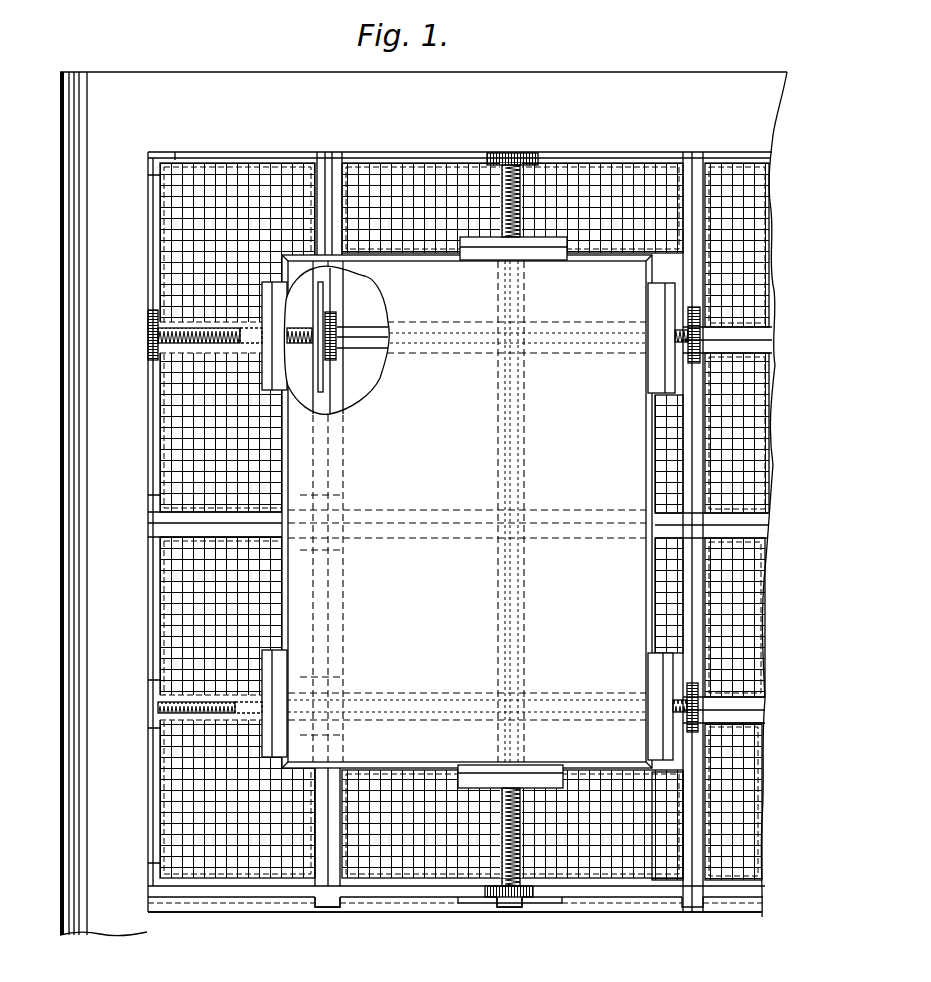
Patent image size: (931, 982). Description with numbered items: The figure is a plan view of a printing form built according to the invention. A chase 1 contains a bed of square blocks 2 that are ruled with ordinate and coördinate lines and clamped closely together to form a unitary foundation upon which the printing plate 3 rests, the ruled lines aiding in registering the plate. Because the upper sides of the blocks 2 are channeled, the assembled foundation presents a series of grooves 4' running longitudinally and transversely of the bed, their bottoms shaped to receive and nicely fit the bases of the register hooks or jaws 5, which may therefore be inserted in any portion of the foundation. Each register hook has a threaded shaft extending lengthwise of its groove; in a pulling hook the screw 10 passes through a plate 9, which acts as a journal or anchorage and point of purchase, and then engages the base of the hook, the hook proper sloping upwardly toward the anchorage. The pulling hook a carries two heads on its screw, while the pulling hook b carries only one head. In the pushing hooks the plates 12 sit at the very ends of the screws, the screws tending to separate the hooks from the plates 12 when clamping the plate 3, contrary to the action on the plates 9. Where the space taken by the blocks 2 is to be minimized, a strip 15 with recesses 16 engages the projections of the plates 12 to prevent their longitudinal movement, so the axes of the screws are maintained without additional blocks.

The chase 1 is at (423, 504).
The square blocks 2 is at (249, 185).
The plate 3 is at (467, 511).
The grooves 4' is at (404, 479).
The hooks or jaws 5 is at (277, 355).
The plates 9 is at (323, 300).
The screw 10 is at (200, 325).
The plates 12 is at (705, 297).
The strip 15 is at (445, 903).
The recesses 16 is at (337, 905).
The pulling hook a is at (150, 333).
The pulling hook b is at (160, 707).